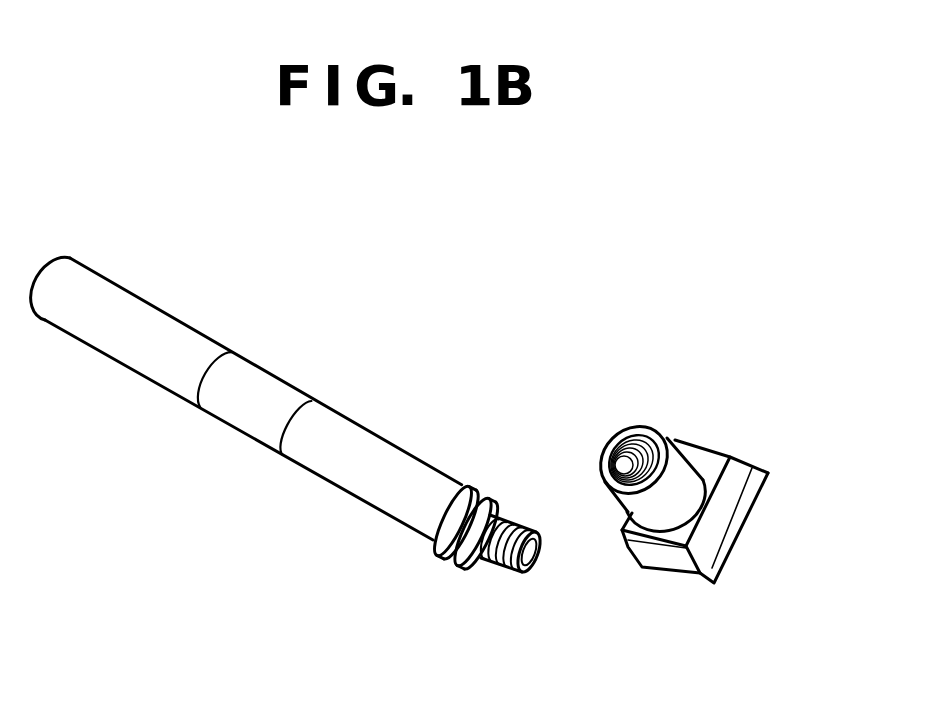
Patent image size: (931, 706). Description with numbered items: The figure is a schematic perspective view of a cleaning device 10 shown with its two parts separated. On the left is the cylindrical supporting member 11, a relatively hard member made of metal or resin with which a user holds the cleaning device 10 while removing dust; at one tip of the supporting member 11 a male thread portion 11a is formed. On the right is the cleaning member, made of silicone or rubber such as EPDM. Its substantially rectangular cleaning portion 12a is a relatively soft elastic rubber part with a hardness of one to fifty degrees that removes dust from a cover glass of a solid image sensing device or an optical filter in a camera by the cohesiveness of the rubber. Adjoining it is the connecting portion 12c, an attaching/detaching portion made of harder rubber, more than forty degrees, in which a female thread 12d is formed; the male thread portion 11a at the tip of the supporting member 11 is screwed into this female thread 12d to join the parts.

The cleaning device 10 is at (291, 241).
The cylindrical supporting member 11 is at (127, 357).
The male thread portion 11a is at (502, 565).
The cleaning portion 12a is at (760, 478).
The connecting portion 12c is at (685, 452).
The female thread 12d is at (612, 450).